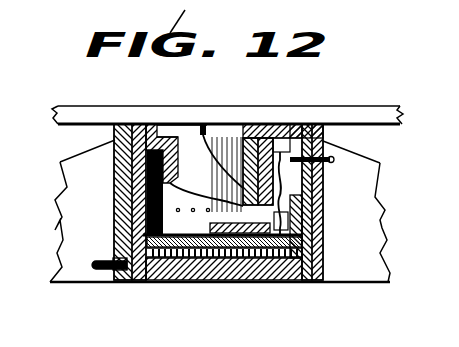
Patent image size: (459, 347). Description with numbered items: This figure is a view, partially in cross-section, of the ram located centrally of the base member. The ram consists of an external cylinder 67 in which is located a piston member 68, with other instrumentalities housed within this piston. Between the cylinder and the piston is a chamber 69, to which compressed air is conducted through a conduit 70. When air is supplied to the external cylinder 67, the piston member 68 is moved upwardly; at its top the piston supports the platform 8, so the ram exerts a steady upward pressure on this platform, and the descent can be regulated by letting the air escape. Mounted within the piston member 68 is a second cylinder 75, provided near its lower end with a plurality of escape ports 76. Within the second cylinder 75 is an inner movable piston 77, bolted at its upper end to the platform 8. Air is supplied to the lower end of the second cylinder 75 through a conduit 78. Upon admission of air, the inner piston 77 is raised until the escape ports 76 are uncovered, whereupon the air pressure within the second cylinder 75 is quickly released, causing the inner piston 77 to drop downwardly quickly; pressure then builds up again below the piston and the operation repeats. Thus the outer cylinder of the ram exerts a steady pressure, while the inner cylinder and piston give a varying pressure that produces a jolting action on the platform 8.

The platform 8 is at (337, 107).
The external cylinder 67 is at (290, 270).
The piston member 68 is at (163, 277).
The chamber 69 is at (237, 255).
The conduit 70 is at (100, 270).
The second cylinder 75 is at (178, 137).
The escape ports 76 is at (115, 206).
The inner movable piston 77 is at (265, 125).
The conduit 78 is at (334, 164).